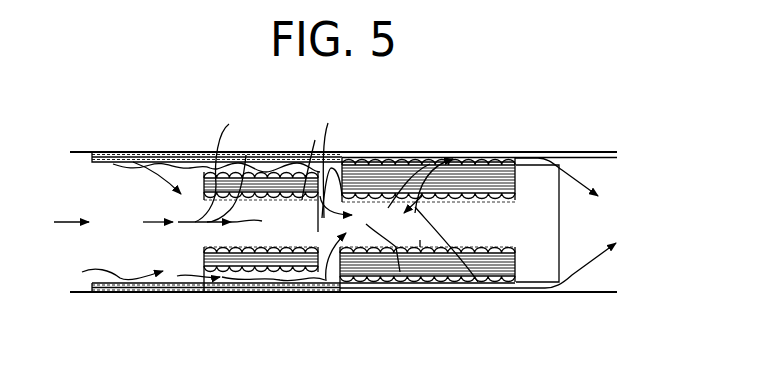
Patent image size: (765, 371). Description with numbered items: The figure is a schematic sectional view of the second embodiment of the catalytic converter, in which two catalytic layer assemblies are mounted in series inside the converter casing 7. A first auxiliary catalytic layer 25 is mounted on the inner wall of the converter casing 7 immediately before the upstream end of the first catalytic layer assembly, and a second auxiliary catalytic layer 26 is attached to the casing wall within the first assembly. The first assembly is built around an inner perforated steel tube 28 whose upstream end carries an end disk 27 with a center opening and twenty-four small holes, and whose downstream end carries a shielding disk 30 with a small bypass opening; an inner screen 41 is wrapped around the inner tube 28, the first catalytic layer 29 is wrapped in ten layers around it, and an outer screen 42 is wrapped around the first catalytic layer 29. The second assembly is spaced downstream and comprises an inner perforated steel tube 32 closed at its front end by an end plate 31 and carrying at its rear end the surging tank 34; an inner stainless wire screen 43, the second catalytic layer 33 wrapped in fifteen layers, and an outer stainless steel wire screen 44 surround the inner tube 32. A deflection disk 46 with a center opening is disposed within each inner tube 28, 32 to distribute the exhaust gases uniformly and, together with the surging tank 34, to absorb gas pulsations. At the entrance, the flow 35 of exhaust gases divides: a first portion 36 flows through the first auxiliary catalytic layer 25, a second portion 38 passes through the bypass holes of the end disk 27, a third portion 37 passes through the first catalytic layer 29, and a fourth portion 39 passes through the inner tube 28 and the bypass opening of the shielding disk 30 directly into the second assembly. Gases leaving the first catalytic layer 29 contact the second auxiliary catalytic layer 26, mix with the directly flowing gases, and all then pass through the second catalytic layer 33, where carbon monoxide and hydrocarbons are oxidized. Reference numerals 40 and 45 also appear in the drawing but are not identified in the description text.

The converter casing 7 is at (88, 152).
The first auxiliary catalytic layer 25 is at (133, 162).
The second auxiliary catalytic layer 26 is at (282, 162).
The end disk 27 is at (210, 165).
The inner perforated steel tube 28 is at (210, 247).
The first catalytic layer 29 is at (262, 262).
The shielding disk 30 is at (341, 159).
The end plate 31 is at (342, 158).
The inner perforated steel tube 32 is at (393, 202).
The second catalytic layer 33 is at (483, 262).
The surging tank 34 is at (558, 172).
The flow of exhaust gases 35 is at (55, 222).
The first portion of the flow 36 is at (109, 167).
The third portion of the main flow 37 is at (171, 222).
The second portion of the main flow 38 is at (228, 220).
The fourth portion of the main flow 39 is at (336, 221).
The flow passage 40 is at (499, 123).
The inner screen 41 is at (229, 312).
The outer screen 42 is at (278, 262).
The inner stainless wire screen 43 is at (496, 201).
The outer stainless steel wire screen 44 is at (390, 282).
The upper left block 45 is at (243, 178).
The deflection disk 46 is at (428, 190).